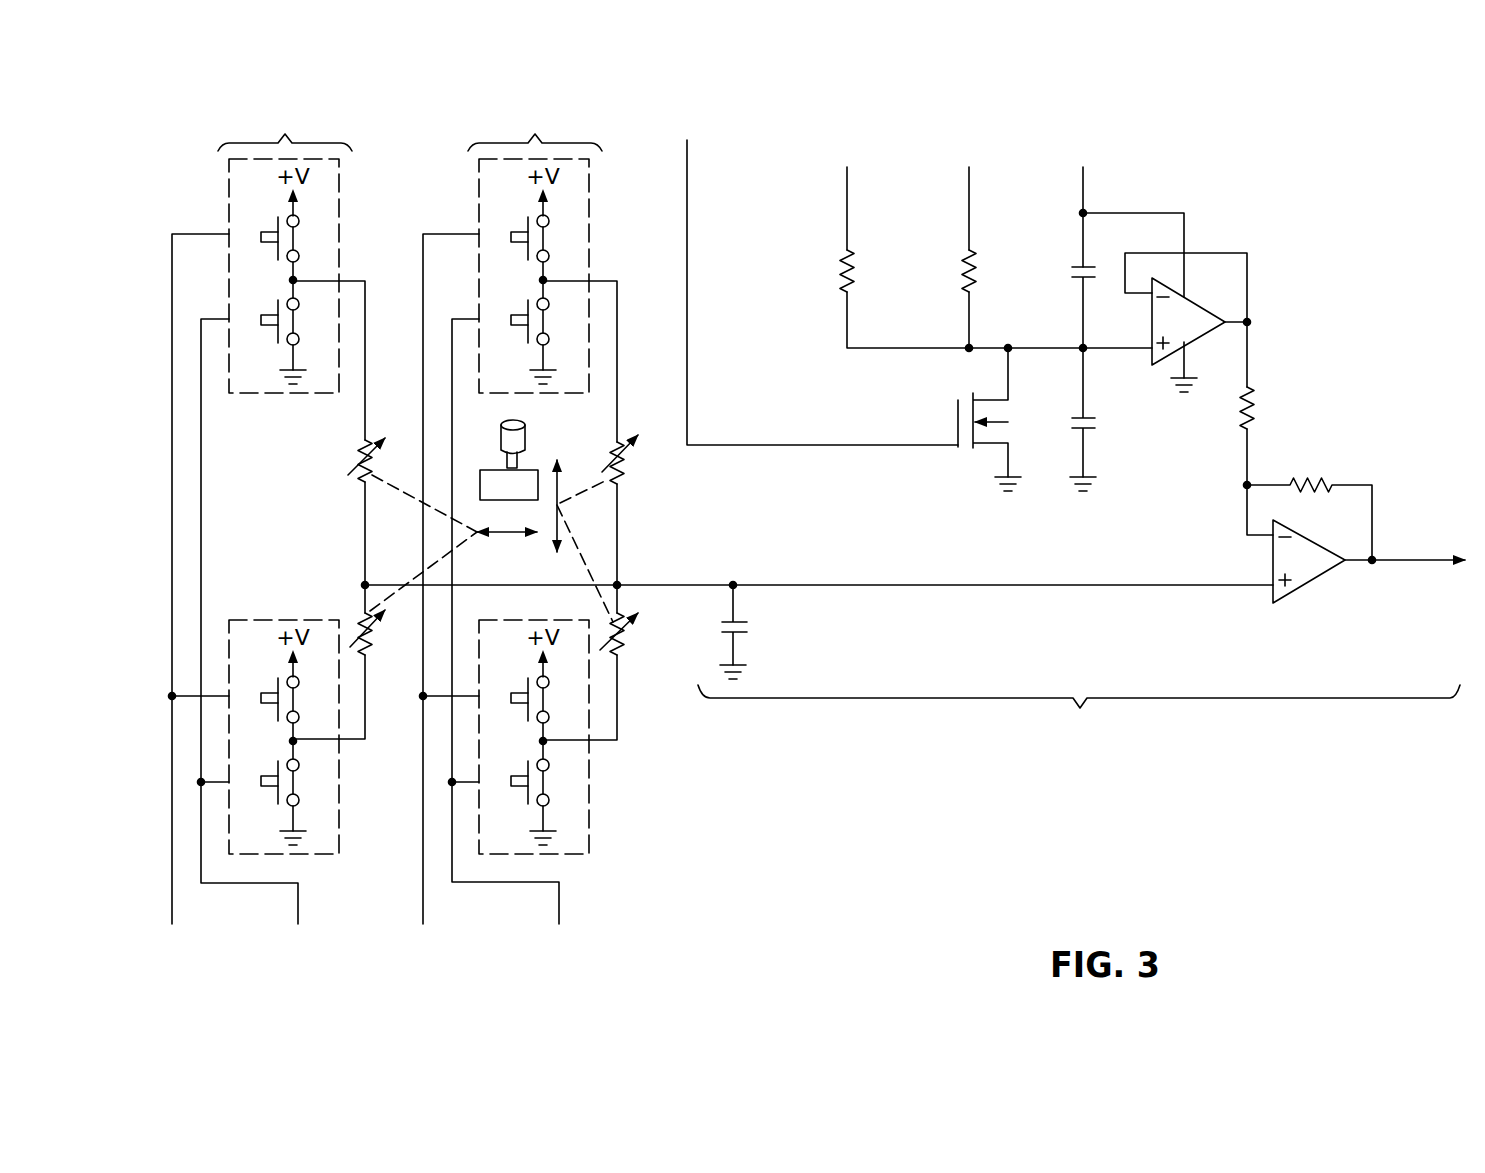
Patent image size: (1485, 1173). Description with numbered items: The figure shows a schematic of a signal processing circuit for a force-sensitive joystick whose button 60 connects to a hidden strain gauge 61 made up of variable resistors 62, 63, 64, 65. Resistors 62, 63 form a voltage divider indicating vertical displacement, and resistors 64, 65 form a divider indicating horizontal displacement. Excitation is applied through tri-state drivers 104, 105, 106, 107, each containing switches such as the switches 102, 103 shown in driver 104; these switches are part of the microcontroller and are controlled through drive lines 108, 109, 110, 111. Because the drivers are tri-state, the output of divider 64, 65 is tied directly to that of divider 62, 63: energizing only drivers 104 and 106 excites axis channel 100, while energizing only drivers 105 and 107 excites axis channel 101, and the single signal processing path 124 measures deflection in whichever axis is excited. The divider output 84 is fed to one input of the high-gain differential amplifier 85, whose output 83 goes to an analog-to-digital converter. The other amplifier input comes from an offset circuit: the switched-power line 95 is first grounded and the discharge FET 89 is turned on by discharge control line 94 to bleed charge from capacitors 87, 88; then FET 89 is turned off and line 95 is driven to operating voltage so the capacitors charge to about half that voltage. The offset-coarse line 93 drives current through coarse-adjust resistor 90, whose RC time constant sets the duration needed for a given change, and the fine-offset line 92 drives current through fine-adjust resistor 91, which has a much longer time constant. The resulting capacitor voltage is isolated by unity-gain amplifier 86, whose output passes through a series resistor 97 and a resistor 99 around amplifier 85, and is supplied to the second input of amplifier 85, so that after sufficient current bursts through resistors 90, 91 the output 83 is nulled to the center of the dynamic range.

The axis channel 100 is at (285, 127).
The axis channel 101 is at (535, 127).
The switch 102 is at (293, 242).
The switch 103 is at (283, 347).
The tri-state driver 104 is at (323, 302).
The tri-state driver 105 is at (588, 200).
The tri-state driver 106 is at (257, 617).
The tri-state driver 107 is at (560, 618).
The drive line 108 is at (173, 902).
The drive line 109 is at (300, 904).
The drive line 110 is at (423, 905).
The drive line 111 is at (559, 907).
The button 60 is at (525, 435).
The strain gauge 61 is at (488, 468).
The variable resistor 62 is at (623, 462).
The variable resistor 63 is at (623, 653).
The variable resistor 64 is at (365, 448).
The variable resistor 65 is at (362, 620).
The voltage divider output 84 is at (667, 583).
The discharge control line 94 is at (687, 198).
The fine-offset line 92 is at (847, 197).
The offset-coarse line 93 is at (969, 198).
The fine-adjust resistor 91 is at (845, 255).
The coarse-adjust resistor 90 is at (968, 255).
The discharge FET 89 is at (985, 447).
The switched-power line 95 is at (1083, 193).
The capacitor 87 is at (1077, 263).
The capacitor 88 is at (1093, 430).
The unity-gain amplifier 86 is at (1205, 337).
The resistor 1K 97 is at (1247, 352).
The feedback resistor 249K 99 is at (1312, 478).
The differential amplifier 85 is at (1315, 582).
The amplifier output 83 is at (1408, 562).
The signal processing path 124 is at (1079, 728).